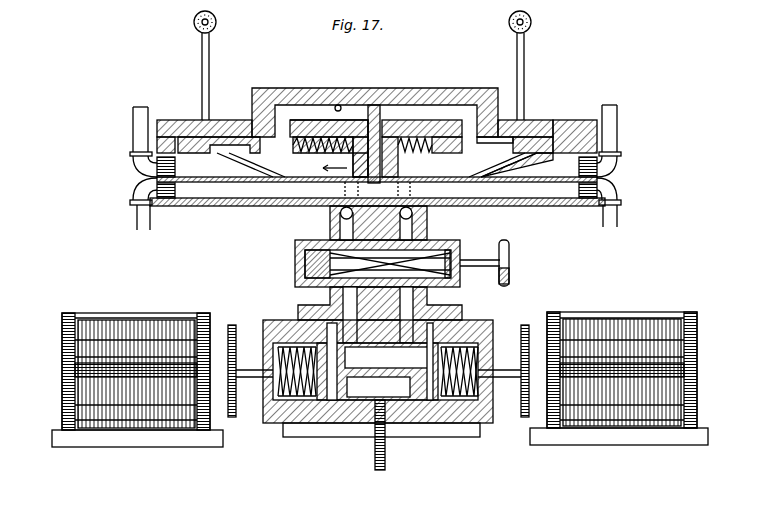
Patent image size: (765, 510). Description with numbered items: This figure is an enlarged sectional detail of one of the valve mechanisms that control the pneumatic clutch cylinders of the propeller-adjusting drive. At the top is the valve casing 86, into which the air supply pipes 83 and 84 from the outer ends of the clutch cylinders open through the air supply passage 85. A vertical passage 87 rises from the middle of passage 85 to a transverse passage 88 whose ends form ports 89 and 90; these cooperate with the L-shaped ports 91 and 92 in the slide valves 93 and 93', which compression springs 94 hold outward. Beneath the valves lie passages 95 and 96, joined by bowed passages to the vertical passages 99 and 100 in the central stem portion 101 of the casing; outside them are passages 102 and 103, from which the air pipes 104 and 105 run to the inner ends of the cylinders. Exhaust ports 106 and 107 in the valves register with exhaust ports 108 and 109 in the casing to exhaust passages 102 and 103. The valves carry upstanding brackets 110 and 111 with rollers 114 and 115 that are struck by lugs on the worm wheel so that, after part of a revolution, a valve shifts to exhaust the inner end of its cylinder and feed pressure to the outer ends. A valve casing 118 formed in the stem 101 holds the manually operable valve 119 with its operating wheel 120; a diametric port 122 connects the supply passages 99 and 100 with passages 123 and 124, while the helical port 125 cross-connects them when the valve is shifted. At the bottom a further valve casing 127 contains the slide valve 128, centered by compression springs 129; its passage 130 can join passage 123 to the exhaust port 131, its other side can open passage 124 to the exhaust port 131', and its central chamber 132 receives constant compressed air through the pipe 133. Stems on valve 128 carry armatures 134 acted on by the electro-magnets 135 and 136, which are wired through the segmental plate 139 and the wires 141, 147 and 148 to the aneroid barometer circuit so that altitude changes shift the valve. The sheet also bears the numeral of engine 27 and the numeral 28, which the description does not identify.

The engine 27 is at (302, 206).
The passage 28 is at (410, 170).
The air supply pipe 83 is at (137, 221).
The air supply pipe 84 is at (618, 217).
The air supply passage 85 is at (377, 191).
The valve casing 86 is at (270, 94).
The vertical passage 87 is at (377, 144).
The transverse passage 88 is at (340, 105).
The port 89 is at (285, 133).
The port 90 is at (470, 118).
The L-shaped port 91 is at (238, 135).
The L-shaped port 92 is at (530, 125).
The slide valve 93 is at (310, 98).
The slide valve 93' is at (443, 98).
The compression spring 94 is at (395, 133).
The passage 95 is at (325, 148).
The passage 96 is at (422, 148).
The vertical passage 99 is at (340, 226).
The vertical passage 100 is at (413, 228).
The central stem portion 101 is at (428, 232).
The passage 102 is at (228, 152).
The passage 103 is at (516, 150).
The air pipe 104 is at (133, 138).
The air pipe 105 is at (618, 137).
The exhaust port 106 is at (172, 120).
The exhaust port 107 is at (566, 120).
The exhaust port 108 is at (200, 122).
The exhaust port 109 is at (568, 120).
The upstanding bracket 110 is at (202, 57).
The upstanding bracket 111 is at (524, 46).
The roller 114 is at (195, 20).
The roller 115 is at (531, 20).
The valve casing 118 is at (297, 262).
The manually operable valve 119 is at (463, 284).
The operating wheel 120 is at (510, 263).
The diametric port 122 is at (450, 255).
The passage 123 is at (343, 300).
The passage 124 is at (414, 300).
The helical port 125 is at (312, 262).
The valve casing 127 is at (365, 427).
The slide valve 128 is at (456, 430).
The compression spring 129 is at (285, 427).
The passage 130 is at (302, 464).
The exhaust port 131 is at (333, 395).
The exhaust port 131' is at (440, 395).
The compressed air supply chamber 132 is at (377, 371).
The pipe 133 is at (376, 468).
The armature 134 is at (233, 418).
The electro-magnet 135 is at (125, 397).
The electro-magnet 136 is at (650, 390).
The insulated segmental plate 139 is at (65, 414).
The wire 141 is at (65, 323).
The wire 147 is at (743, 418).
The wire 148 is at (743, 318).